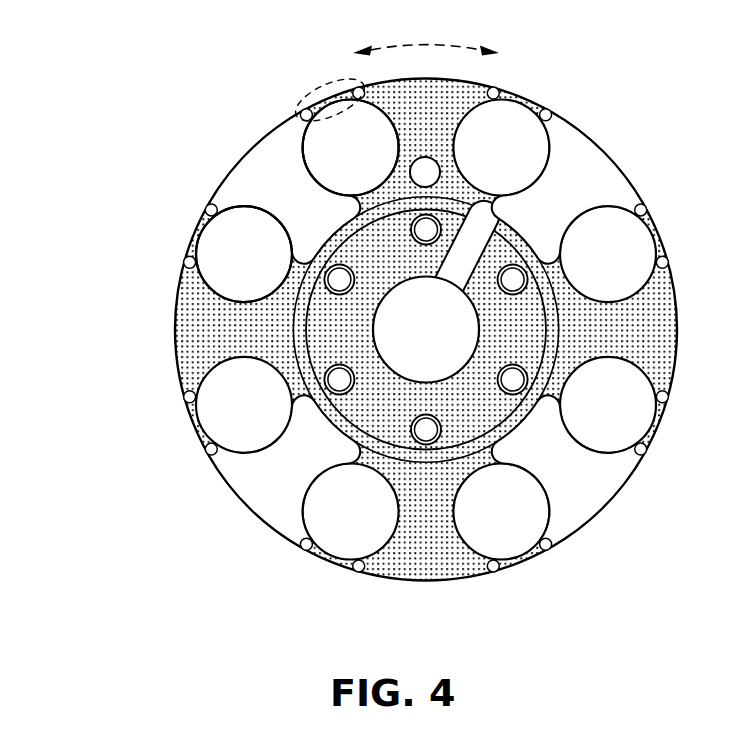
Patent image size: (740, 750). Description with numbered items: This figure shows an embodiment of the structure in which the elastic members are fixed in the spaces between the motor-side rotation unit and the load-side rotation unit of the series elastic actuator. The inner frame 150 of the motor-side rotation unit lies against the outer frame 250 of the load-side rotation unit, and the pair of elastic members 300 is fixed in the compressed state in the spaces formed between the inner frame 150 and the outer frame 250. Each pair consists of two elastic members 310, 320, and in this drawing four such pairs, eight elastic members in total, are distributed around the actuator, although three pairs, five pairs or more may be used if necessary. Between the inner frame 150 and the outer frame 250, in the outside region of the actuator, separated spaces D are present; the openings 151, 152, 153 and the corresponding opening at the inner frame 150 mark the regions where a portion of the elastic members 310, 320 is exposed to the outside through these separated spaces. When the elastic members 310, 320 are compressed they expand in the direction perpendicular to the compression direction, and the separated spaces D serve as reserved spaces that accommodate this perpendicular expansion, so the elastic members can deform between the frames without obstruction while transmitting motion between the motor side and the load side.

The inner frame 150 is at (257, 167).
The second opening 151 is at (592, 158).
The third opening 152 is at (585, 492).
The fourth opening 153 is at (267, 485).
The outer frame 250 is at (198, 334).
The pair of elastic members 300 is at (219, 201).
The elastic member 310 is at (230, 267).
The elastic member 320 is at (328, 175).
The separated spaces D is at (326, 86).